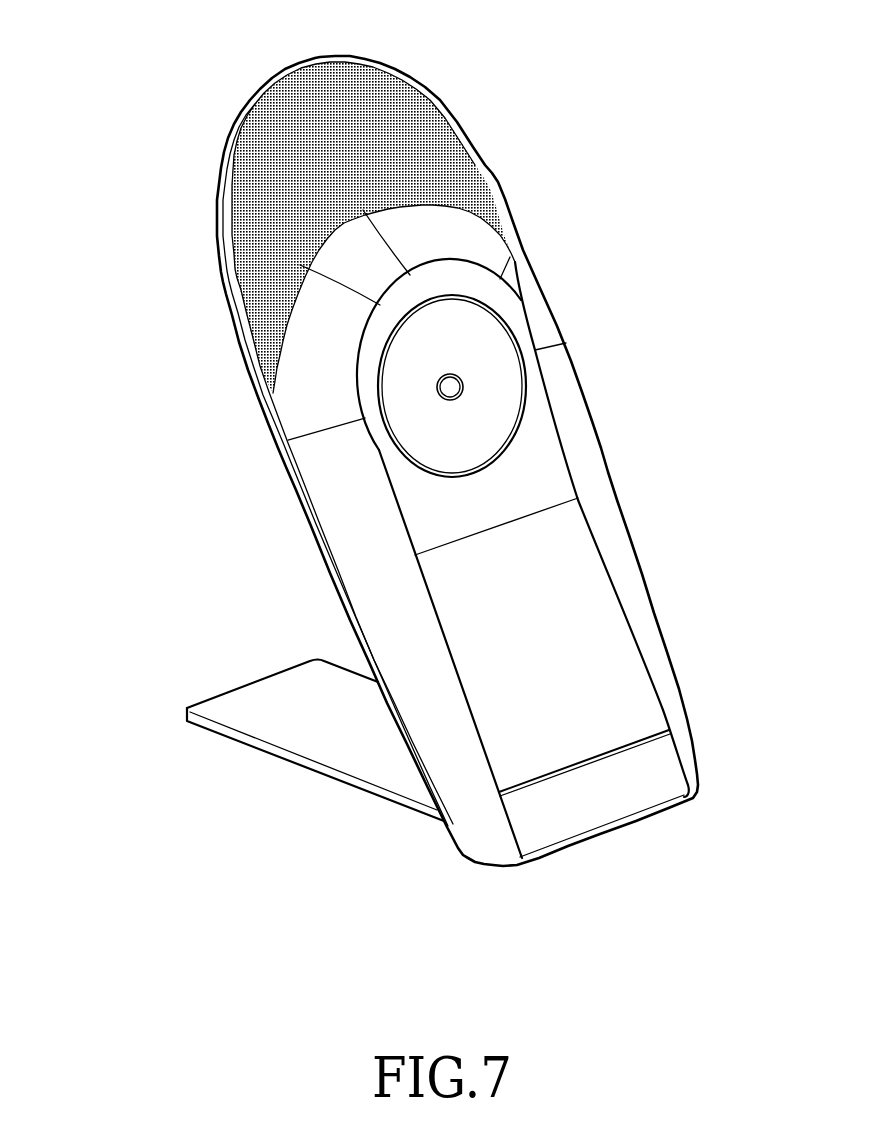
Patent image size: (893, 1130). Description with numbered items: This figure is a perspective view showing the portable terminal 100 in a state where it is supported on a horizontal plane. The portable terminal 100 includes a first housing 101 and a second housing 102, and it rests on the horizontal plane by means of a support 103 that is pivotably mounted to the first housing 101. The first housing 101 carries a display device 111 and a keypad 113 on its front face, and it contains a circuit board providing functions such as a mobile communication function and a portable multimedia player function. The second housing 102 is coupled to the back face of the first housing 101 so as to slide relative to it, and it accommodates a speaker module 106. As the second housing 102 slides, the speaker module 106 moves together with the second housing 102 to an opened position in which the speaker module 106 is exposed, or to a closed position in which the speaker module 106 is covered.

The portable terminal 100 is at (100, 154).
The first housing 101 is at (692, 647).
The second housing 102 is at (294, 57).
The support 103 is at (342, 755).
The speaker module 106 is at (432, 124).
The display device 111 is at (585, 598).
The keypad 113 is at (475, 335).